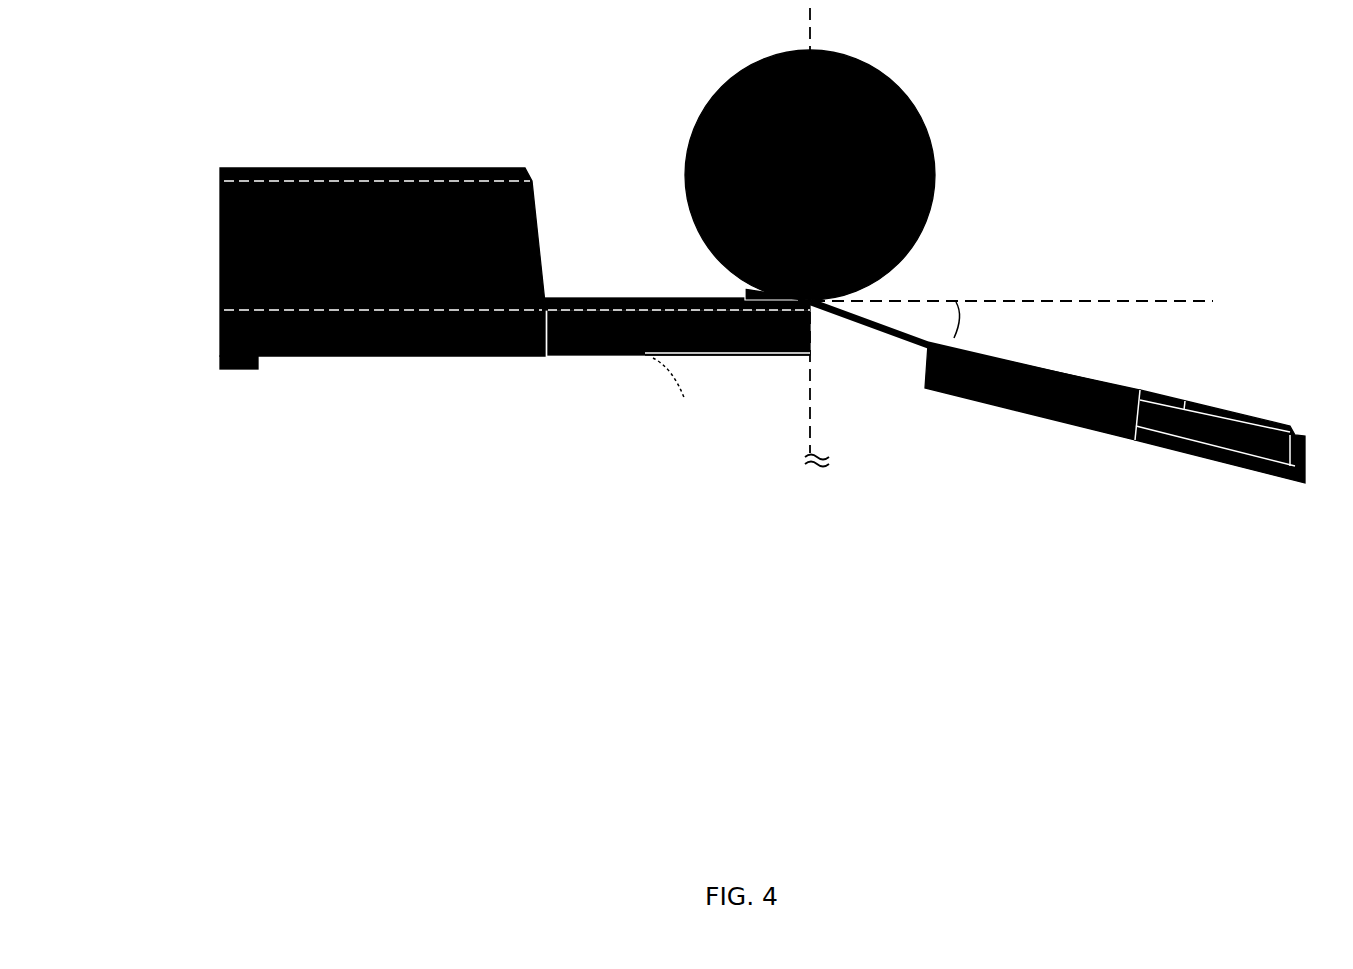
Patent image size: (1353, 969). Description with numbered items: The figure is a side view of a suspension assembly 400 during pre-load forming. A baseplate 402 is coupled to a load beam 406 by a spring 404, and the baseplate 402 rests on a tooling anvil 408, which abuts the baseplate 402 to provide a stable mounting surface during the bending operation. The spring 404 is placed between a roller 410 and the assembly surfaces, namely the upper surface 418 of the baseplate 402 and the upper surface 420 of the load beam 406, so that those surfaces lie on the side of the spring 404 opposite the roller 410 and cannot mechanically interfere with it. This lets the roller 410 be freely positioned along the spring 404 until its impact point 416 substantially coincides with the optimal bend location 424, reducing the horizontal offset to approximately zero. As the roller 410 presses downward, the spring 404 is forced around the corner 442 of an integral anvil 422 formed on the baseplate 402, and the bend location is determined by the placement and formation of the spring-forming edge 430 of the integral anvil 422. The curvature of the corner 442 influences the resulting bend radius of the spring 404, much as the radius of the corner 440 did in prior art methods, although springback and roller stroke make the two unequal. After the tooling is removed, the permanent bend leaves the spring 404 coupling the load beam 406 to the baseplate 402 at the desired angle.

The assembly 400 is at (617, 29).
The baseplate 402 is at (531, 204).
The spring 404 is at (1130, 382).
The load beam 406 is at (1015, 389).
The tooling anvil 408 is at (307, 673).
The roller 410 is at (906, 121).
The impact point 416 is at (806, 297).
The upper surface 418 is at (628, 292).
The upper surface 420 is at (1018, 348).
The integral anvil 422 is at (695, 305).
The optimal bend location 424 is at (776, 302).
The spring-forming edge 430 is at (801, 347).
The corner 440 is at (655, 366).
The corner 442 is at (792, 316).